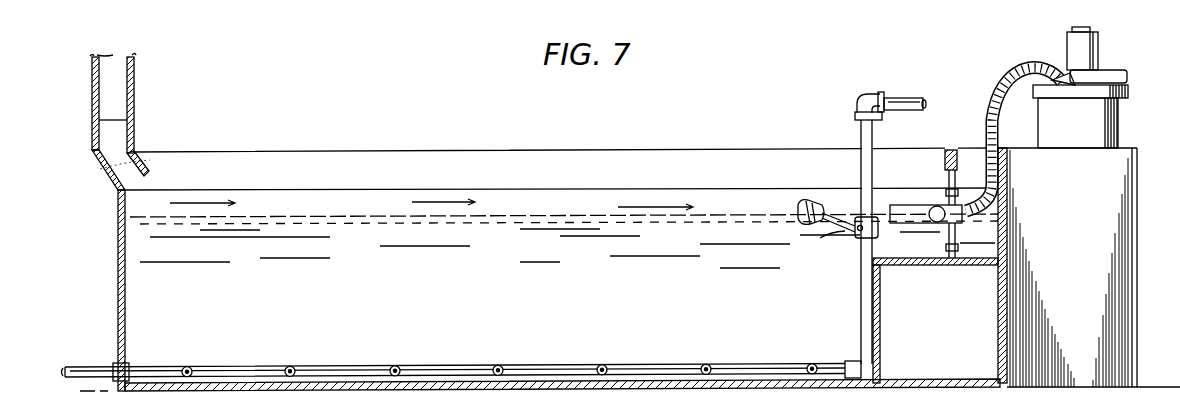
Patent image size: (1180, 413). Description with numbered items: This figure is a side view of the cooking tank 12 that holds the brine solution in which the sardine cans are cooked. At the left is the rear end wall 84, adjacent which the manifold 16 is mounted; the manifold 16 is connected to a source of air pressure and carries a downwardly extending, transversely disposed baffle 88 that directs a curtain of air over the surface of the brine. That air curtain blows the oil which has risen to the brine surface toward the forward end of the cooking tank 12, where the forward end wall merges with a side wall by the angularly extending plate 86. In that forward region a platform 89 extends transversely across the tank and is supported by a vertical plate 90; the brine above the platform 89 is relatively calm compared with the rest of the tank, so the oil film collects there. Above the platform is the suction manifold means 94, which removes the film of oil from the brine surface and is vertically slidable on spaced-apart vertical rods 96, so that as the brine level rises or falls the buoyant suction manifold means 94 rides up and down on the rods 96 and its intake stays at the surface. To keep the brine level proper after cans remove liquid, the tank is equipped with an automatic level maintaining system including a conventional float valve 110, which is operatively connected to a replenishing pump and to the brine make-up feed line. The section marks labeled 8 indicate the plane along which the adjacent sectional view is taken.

The cooking tank 12 is at (437, 138).
The manifold 16 is at (137, 98).
The baffle 88 is at (135, 157).
The rear end wall 84 is at (118, 280).
The angularly extending plate 86 is at (494, 252).
The float valve 110 is at (857, 229).
The vertical rods 96 is at (945, 178).
The suction manifold means 94 is at (997, 218).
The platform 89 is at (928, 266).
The vertical plate 90 is at (877, 330).
The section line 8- 8 is at (705, 107).